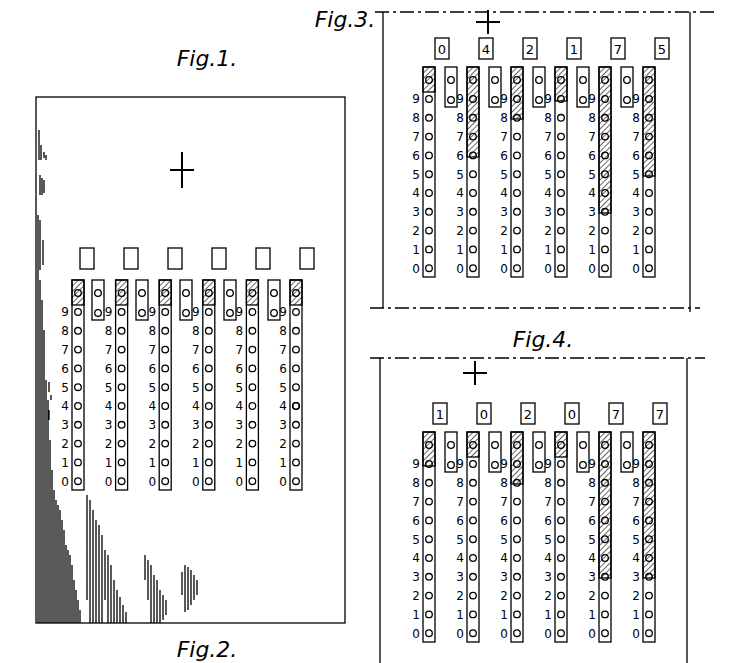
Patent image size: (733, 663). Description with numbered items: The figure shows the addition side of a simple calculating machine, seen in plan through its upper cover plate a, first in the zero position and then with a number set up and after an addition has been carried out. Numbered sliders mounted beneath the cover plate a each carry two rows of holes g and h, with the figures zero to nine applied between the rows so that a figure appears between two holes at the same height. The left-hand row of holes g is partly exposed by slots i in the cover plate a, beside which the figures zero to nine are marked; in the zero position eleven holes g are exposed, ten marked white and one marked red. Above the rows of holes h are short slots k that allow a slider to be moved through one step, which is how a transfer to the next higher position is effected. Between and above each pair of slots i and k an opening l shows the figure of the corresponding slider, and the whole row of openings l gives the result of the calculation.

The cover plate a is at (309, 100).
The openings l is at (262, 249).
The short slots k is at (274, 280).
The holes h is at (302, 303).
The holes g is at (301, 370).
The slots i is at (303, 405).